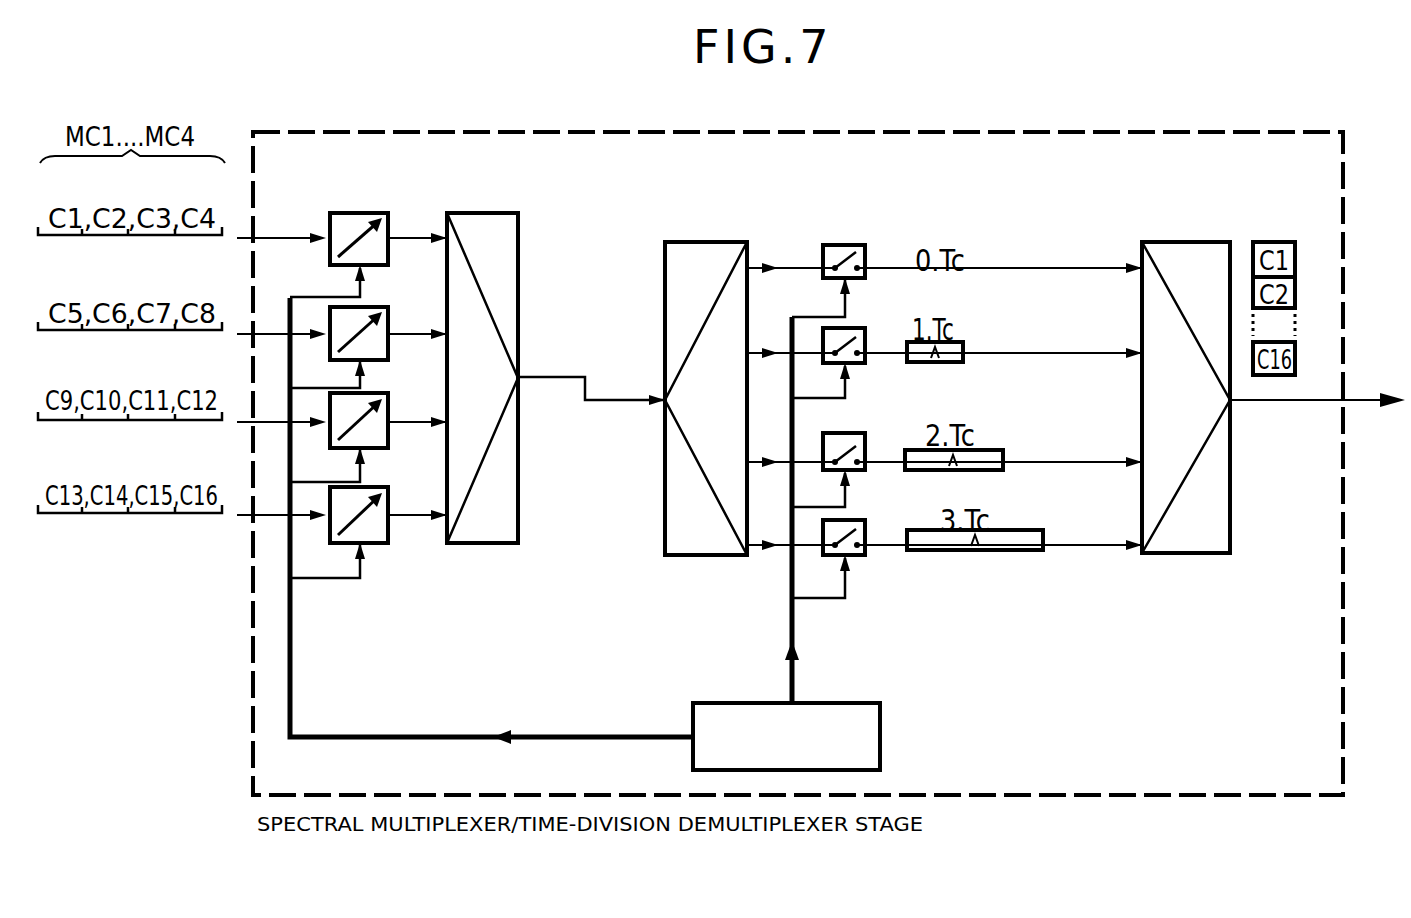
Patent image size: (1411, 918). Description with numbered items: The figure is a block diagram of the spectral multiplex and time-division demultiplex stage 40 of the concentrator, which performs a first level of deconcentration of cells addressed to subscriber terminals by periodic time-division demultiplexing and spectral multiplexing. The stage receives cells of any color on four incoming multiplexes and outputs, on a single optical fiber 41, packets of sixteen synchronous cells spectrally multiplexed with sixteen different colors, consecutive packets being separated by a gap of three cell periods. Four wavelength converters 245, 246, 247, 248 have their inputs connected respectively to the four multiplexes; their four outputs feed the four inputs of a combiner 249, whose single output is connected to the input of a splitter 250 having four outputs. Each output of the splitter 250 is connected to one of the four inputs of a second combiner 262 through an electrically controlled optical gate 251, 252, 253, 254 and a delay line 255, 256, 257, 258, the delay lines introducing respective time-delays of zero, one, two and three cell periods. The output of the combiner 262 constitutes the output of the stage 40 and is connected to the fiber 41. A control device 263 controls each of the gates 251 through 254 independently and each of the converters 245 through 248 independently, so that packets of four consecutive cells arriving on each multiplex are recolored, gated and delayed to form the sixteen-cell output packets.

The spectral multiplex and time-division demultiplex stage 40 is at (390, 132).
The optical fiber 41 is at (1360, 395).
The wavelength converter 245 is at (366, 213).
The wavelength converter 246 is at (375, 307).
The wavelength converter 247 is at (375, 393).
The wavelength converter 248 is at (375, 487).
The combiner 249 is at (487, 213).
The splitter 250 is at (697, 248).
The electrically controlled optical gate 251 is at (845, 245).
The electrically controlled optical gate 252 is at (850, 328).
The electrically controlled optical gate 253 is at (850, 433).
The electrically controlled optical gate 254 is at (850, 520).
The delay line 255 is at (940, 272).
The delay line 256 is at (945, 362).
The delay line 257 is at (985, 470).
The delay line 258 is at (995, 552).
The combiner 262 is at (1172, 248).
The control device 263 is at (880, 727).